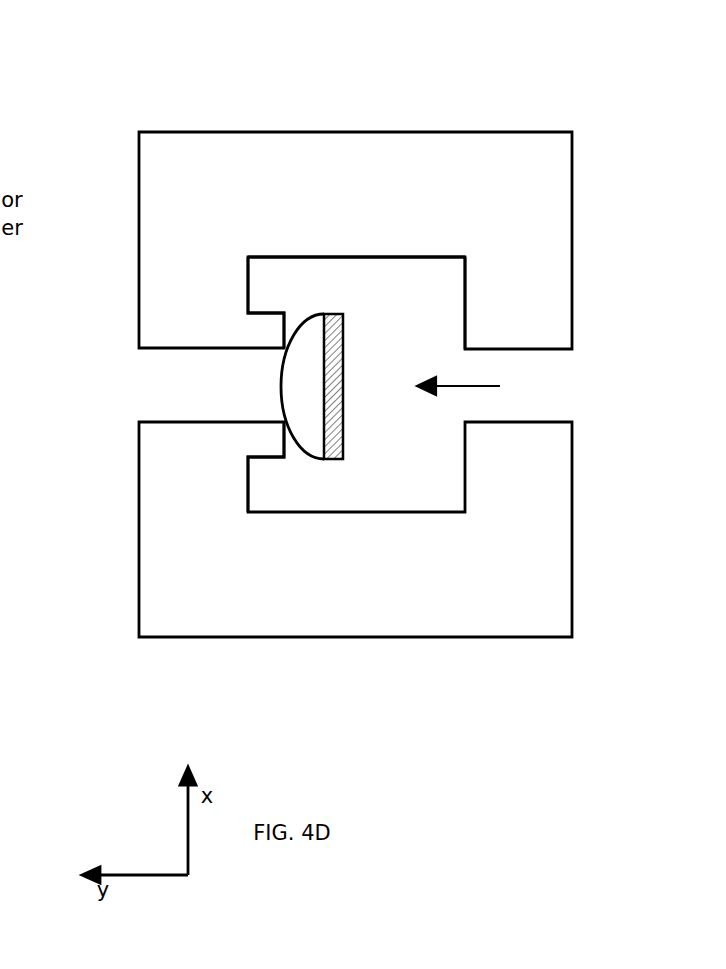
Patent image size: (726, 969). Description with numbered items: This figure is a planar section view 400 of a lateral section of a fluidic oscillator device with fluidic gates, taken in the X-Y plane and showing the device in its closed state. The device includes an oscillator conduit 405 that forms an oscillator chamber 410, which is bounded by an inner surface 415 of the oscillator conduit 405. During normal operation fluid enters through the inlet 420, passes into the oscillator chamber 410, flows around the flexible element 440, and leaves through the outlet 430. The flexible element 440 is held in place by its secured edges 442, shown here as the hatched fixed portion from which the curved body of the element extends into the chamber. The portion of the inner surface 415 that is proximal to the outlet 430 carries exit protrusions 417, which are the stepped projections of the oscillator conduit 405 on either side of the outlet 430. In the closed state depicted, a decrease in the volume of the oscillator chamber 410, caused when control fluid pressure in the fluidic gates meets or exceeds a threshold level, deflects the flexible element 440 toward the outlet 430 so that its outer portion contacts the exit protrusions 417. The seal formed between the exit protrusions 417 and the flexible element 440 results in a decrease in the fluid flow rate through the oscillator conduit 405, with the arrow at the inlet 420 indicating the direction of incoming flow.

The planar section view 400 is at (43, 24).
The oscillator conduit 405 is at (557, 200).
The oscillator chamber 410 is at (449, 322).
The inner surface 415 is at (388, 257).
The exit protrusion 417 is at (283, 438).
The inlet 420 is at (547, 393).
The outlet 430 is at (140, 392).
The flexible element 440 is at (283, 365).
The secured edges 442 is at (338, 435).